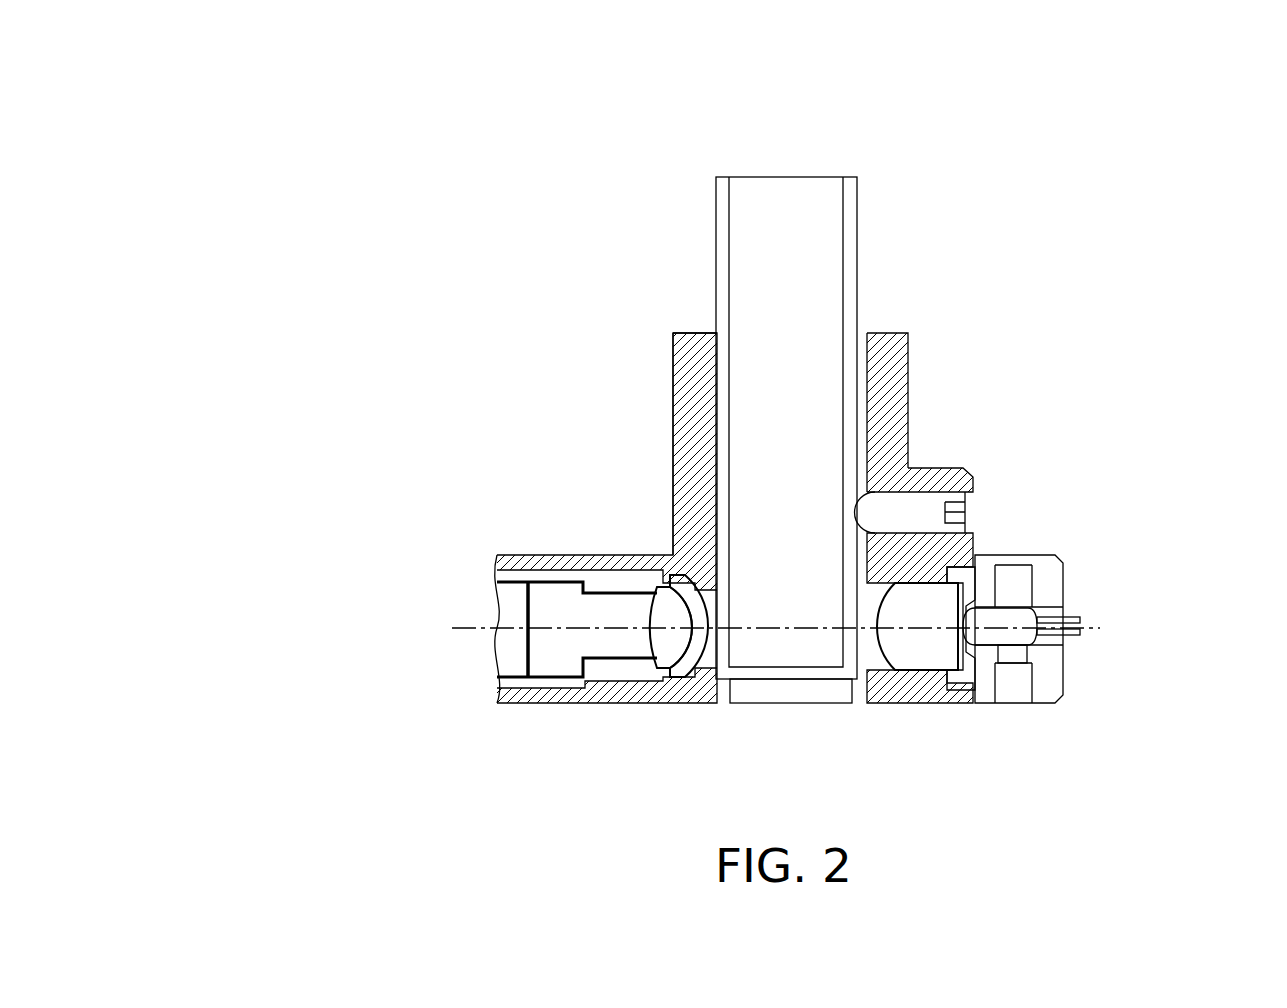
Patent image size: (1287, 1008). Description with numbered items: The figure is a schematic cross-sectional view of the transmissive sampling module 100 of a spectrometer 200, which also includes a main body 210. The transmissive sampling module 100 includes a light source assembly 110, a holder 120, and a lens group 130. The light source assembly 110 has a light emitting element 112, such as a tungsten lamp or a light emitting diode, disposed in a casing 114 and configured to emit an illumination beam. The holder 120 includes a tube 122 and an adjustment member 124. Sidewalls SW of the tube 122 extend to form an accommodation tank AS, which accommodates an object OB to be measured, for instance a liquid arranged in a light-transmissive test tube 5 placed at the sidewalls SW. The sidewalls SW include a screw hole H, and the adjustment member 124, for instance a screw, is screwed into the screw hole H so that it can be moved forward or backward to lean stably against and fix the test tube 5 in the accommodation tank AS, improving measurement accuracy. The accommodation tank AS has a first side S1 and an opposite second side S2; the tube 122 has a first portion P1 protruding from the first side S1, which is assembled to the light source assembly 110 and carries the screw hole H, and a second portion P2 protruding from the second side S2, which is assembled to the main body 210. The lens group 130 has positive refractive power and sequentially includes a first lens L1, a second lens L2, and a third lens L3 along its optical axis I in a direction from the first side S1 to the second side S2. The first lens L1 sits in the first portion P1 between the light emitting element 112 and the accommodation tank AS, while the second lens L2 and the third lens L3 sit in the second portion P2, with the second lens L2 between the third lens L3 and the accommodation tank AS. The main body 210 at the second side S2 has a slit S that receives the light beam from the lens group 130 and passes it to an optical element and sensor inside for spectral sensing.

The transmissive sampling module 100 is at (699, 433).
The light source assembly 110 is at (647, 411).
The light emitting element 112 is at (988, 650).
The casing 114 is at (1050, 583).
The holder 120 is at (603, 429).
The tube 122 is at (603, 429).
The adjustment member 124 is at (630, 452).
The lens group 130 is at (642, 399).
The spectrometer 200 is at (982, 475).
The main body 210 is at (574, 630).
The test tube 5 is at (786, 442).
The first portion P1 is at (955, 484).
The second portion P2 is at (623, 562).
The sidewalls SW is at (683, 376).
The first lens L1 is at (913, 660).
The second lens L2 is at (684, 665).
The third lens L3 is at (648, 645).
The screw hole H is at (985, 516).
The accommodation tank AS is at (868, 349).
The slit S is at (528, 662).
The first side S1 is at (982, 224).
The second side S2 is at (582, 226).
The object OB is at (795, 660).
The optical axis I is at (468, 625).